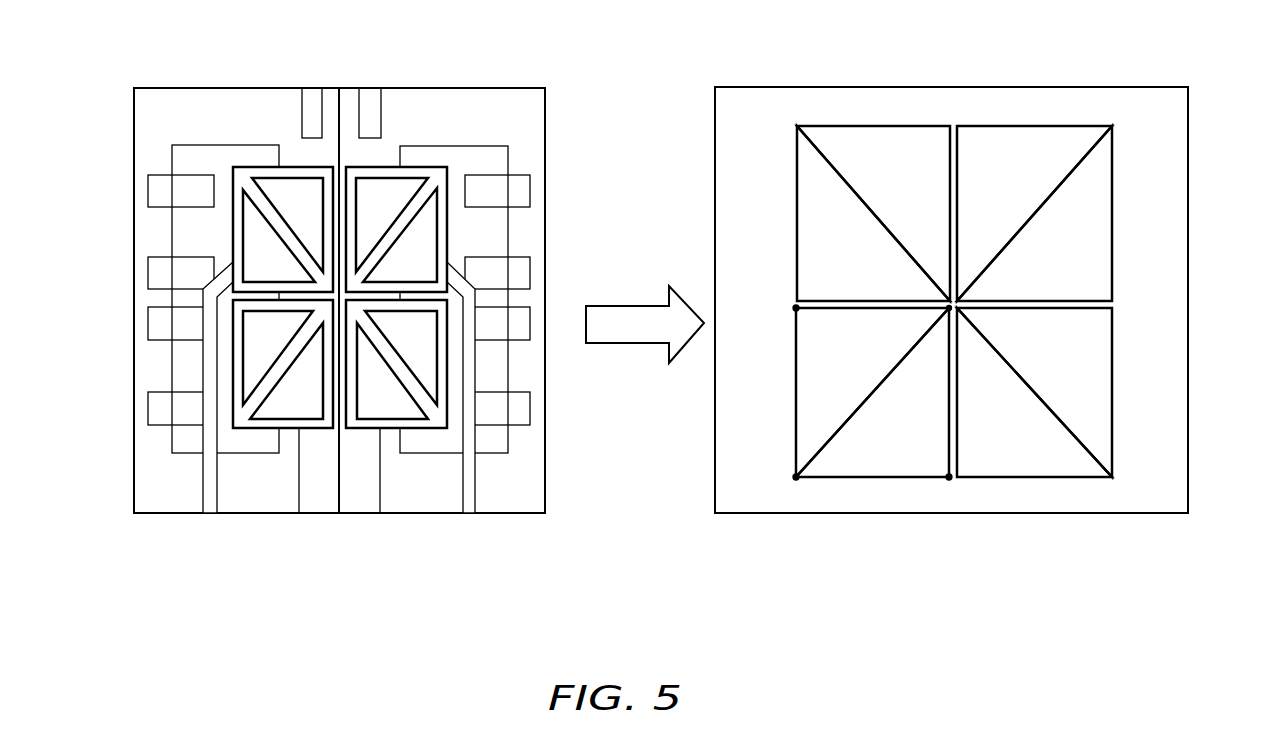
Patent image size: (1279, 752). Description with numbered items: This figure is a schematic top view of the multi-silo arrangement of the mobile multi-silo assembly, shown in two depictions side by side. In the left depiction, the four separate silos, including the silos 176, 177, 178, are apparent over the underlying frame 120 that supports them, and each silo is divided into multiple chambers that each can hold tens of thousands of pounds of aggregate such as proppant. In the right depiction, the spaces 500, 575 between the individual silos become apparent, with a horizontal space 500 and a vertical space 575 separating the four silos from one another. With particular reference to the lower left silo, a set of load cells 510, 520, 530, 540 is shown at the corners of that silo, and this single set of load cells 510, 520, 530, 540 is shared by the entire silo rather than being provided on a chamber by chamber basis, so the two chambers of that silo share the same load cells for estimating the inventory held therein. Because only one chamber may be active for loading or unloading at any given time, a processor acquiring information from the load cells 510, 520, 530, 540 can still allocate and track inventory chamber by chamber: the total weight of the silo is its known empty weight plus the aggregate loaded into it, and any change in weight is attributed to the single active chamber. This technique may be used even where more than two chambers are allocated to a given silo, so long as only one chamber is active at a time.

The frame 120 is at (510, 478).
The silo 176 is at (203, 229).
The silo 177 is at (476, 219).
The silo 178 is at (477, 364).
The space 500 is at (953, 304).
The load cell 510 is at (796, 308).
The load cell 520 is at (796, 477).
The load cell 530 is at (949, 308).
The load cell 540 is at (949, 477).
The space 575 is at (953, 123).